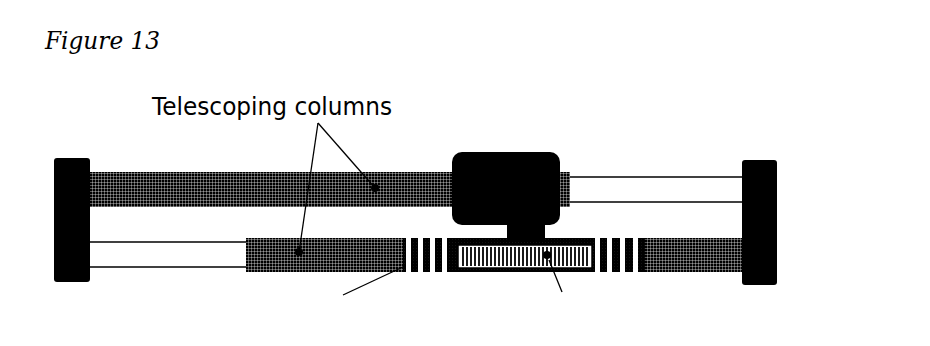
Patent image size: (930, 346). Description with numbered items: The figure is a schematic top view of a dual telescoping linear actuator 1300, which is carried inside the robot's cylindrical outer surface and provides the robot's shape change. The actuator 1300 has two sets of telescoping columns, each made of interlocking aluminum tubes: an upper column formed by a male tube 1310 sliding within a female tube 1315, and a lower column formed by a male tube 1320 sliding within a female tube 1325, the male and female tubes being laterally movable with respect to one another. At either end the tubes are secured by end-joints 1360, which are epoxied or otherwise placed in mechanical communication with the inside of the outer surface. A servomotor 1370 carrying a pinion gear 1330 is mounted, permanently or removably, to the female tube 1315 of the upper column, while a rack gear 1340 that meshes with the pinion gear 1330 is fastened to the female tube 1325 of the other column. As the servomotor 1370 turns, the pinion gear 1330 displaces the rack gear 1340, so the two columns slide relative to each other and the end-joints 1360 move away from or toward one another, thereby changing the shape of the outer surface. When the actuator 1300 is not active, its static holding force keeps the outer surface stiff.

The linear actuator 1300 is at (541, 104).
The male tube 1310 is at (606, 177).
The female tube 1315 is at (147, 172).
The male tube 1320 is at (155, 242).
The female tube 1325 is at (340, 238).
The pinion gear 1330 is at (467, 262).
The rack gear 1340 is at (417, 259).
The end-joints 1360 is at (74, 283).
The servomotor 1370 is at (540, 152).